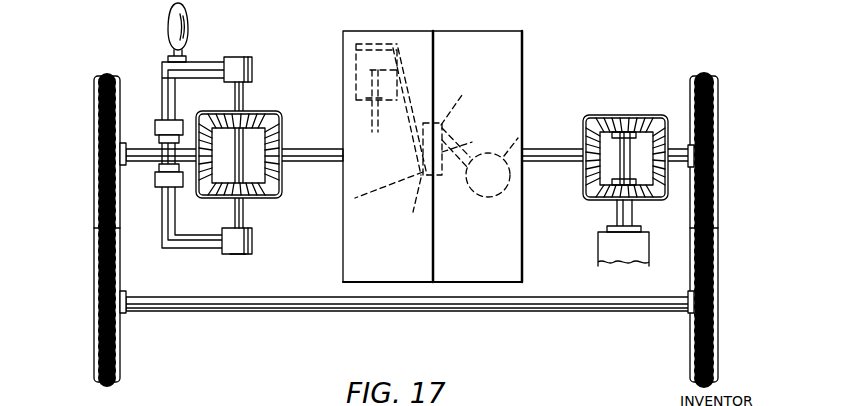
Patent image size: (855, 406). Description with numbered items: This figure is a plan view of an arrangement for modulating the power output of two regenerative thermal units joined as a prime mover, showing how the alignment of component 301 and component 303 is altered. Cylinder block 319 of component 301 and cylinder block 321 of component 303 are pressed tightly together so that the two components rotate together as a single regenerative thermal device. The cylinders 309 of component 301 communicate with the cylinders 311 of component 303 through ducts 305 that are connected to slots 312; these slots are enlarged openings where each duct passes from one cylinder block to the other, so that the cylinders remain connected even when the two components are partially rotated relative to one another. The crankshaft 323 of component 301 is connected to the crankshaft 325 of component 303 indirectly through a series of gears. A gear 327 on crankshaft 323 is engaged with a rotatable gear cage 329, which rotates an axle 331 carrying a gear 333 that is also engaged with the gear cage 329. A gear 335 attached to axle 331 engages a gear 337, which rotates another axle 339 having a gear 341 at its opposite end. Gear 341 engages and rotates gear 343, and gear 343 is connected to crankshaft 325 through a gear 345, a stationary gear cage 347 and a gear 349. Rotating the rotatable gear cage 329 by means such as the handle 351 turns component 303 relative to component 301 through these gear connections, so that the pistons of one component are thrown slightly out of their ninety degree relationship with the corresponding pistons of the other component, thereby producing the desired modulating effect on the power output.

The component 301 is at (336, 45).
The component 303 is at (529, 61).
The duct 305 is at (435, 160).
The cylinder 309 is at (360, 86).
The cylinder 311 is at (520, 158).
The slot 312 is at (432, 144).
The cylinder block 319 is at (343, 270).
The cylinder block 321 is at (522, 274).
The crankshaft 323 is at (302, 162).
The crankshaft 325 is at (538, 162).
The gear 327 is at (282, 134).
The rotatable gear cage 329 is at (256, 98).
The axle 331 is at (128, 160).
The gear 333 is at (222, 136).
The gear 335 is at (94, 102).
The gear 337 is at (98, 332).
The axle 339 is at (345, 312).
The gear 341 is at (718, 300).
The gear 343 is at (718, 172).
The gear 345 is at (660, 176).
The stationary gear cage 347 is at (665, 96).
The gear 349 is at (592, 128).
The handle 351 is at (175, 22).